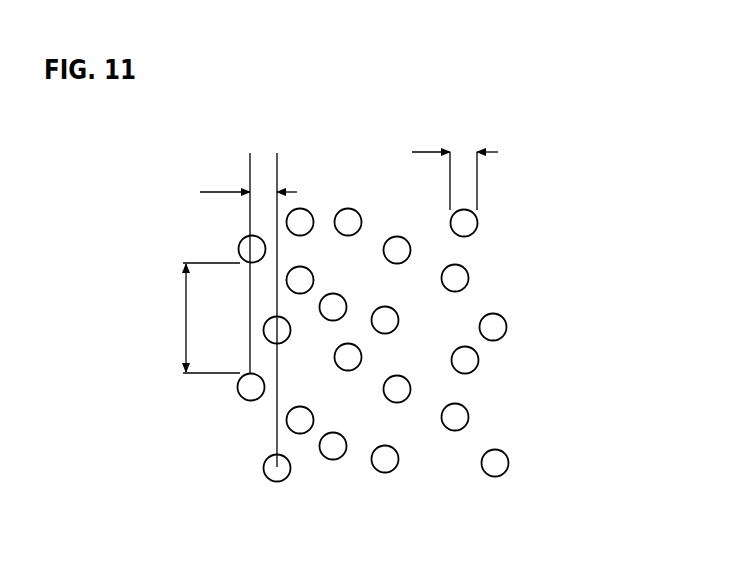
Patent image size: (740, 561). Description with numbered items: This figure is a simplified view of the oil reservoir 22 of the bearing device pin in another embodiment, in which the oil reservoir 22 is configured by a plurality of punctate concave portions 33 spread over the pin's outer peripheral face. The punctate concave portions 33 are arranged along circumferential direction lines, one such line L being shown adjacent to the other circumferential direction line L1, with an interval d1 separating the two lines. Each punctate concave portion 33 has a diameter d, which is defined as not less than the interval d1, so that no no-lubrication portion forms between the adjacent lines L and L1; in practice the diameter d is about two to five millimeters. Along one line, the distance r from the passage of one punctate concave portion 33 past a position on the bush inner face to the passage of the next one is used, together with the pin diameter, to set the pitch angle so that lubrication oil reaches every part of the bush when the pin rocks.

The oil reservoir 22 is at (376, 342).
The punctate concave portion 33 is at (248, 250).
The circumferential direction line L is at (250, 160).
The other circumferential direction line L1 is at (277, 160).
The diameter of punctate concave portion d is at (455, 168).
The interval between circumferential direction lines d1 is at (248, 178).
The distance between successive punctate concave portions r is at (204, 318).